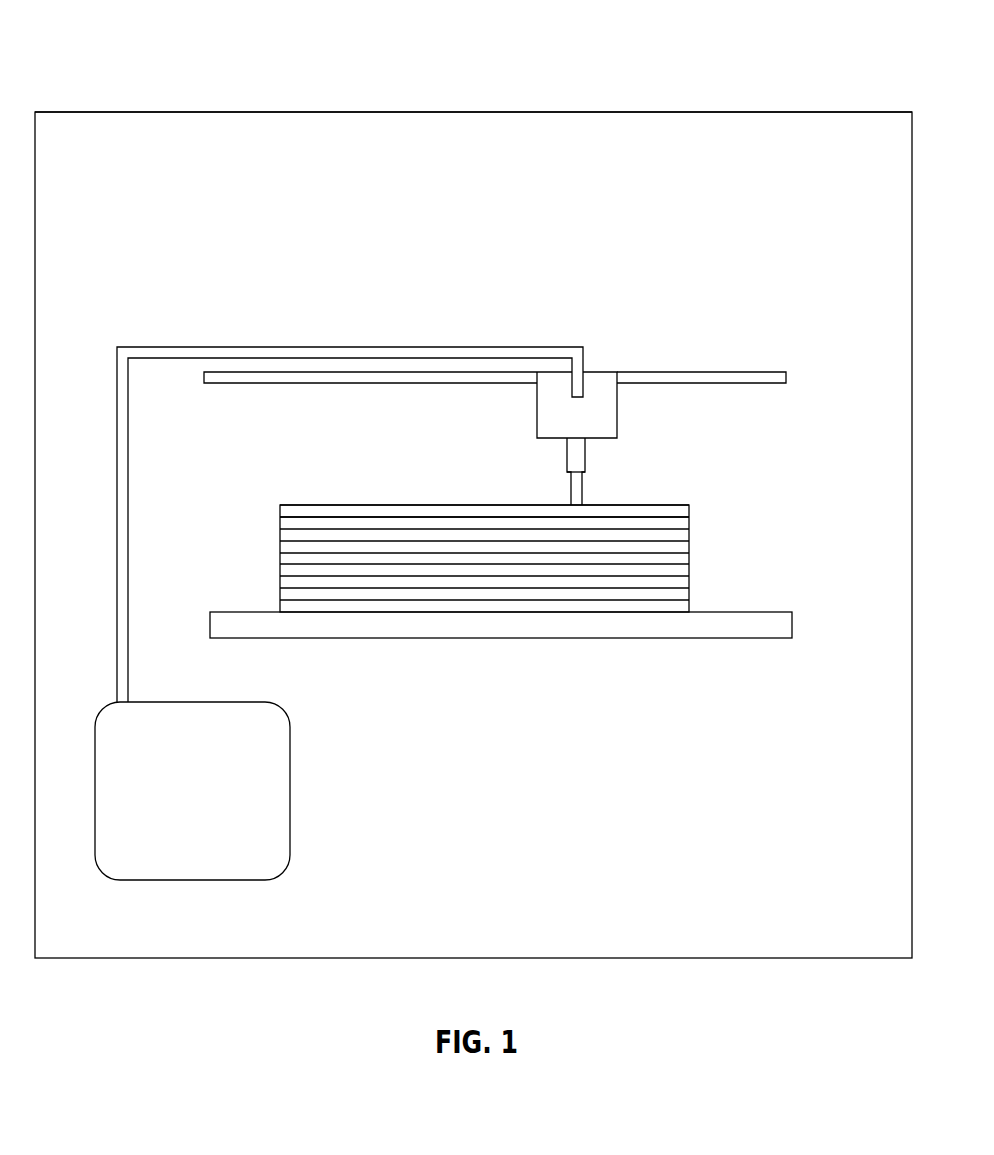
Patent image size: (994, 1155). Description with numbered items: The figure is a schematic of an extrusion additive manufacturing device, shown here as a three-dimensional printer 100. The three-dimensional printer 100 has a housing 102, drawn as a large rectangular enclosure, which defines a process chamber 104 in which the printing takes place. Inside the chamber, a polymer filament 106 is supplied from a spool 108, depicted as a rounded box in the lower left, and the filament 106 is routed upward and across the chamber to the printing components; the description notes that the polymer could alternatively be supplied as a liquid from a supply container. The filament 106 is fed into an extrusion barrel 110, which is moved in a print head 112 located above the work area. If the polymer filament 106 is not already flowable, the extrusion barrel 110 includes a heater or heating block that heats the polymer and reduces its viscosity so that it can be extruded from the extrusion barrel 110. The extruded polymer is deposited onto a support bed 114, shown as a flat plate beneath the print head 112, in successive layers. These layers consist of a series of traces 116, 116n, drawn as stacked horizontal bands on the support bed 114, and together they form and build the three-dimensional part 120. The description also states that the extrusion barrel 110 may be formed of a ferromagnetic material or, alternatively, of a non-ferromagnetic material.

The three-dimensional printer 100 is at (118, 42).
The housing 102 is at (445, 127).
The process chamber 104 is at (618, 140).
The polymer filament 106 is at (117, 383).
The spool 108 is at (290, 790).
The extrusion barrel 110 is at (578, 452).
The print head 112 is at (603, 408).
The support bed 114 is at (517, 640).
The trace 116 is at (680, 586).
The trace 116n is at (682, 523).
The three-dimensional part 120 is at (245, 553).